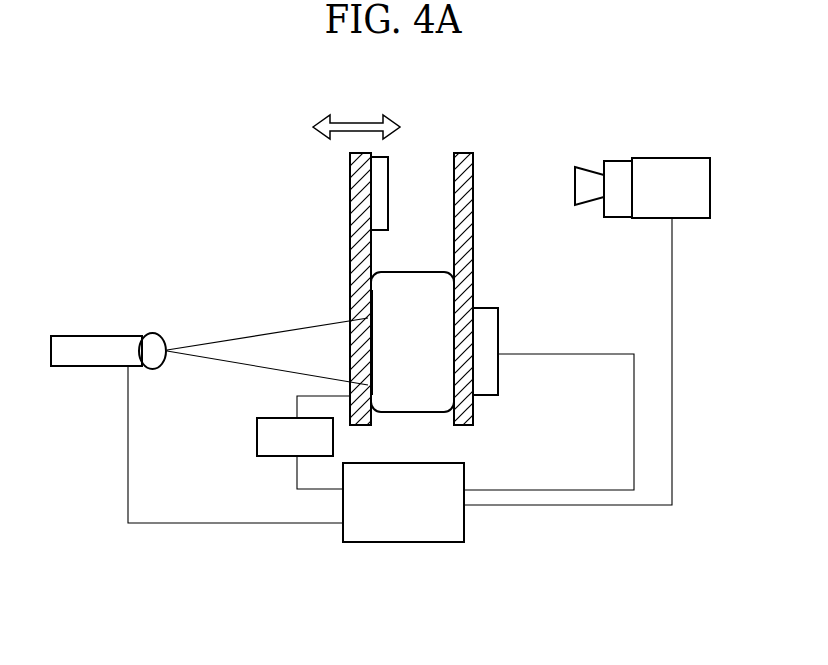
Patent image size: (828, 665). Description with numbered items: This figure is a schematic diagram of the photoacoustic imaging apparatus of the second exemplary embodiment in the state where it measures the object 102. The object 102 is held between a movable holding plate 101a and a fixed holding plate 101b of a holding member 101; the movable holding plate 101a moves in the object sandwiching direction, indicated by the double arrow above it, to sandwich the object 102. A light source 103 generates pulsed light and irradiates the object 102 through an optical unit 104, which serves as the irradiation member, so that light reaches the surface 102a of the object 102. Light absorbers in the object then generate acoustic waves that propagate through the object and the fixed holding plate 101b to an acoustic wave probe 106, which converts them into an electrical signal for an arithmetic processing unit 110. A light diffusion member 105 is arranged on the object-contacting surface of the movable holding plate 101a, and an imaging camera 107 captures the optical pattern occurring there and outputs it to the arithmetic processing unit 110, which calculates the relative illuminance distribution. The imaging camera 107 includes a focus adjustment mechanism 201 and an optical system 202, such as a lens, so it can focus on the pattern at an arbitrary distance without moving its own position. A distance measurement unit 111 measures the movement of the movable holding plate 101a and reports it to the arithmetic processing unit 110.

The holding member 101 is at (407, 289).
The movable holding plate 101a is at (350, 240).
The fixed holding plate 101b is at (473, 239).
The object 102 is at (432, 413).
The surface of the object 102a is at (371, 363).
The light source 103 is at (73, 367).
The optical unit 104 is at (153, 334).
The light diffusion member 105 is at (389, 192).
The acoustic wave probe 106 is at (498, 328).
The imaging camera 107 is at (655, 219).
The arithmetic processing unit 110 is at (406, 543).
The distance measurement unit 111 is at (257, 437).
The focus adjustment mechanism 201 is at (648, 136).
The optical system 202 is at (584, 168).